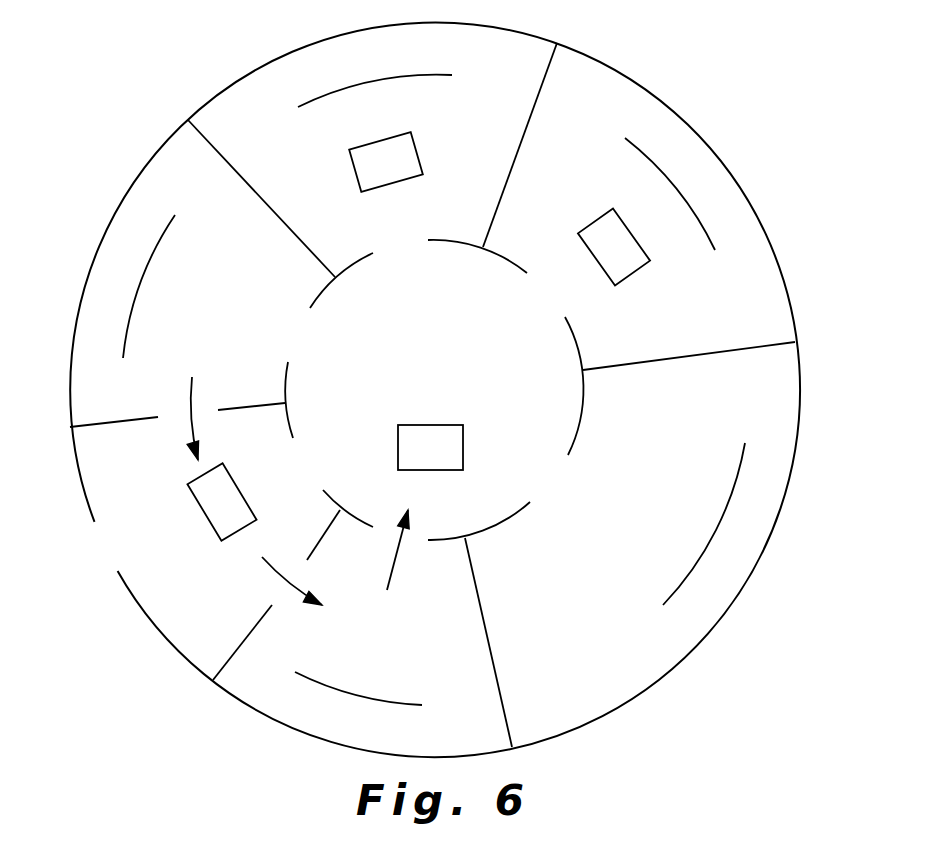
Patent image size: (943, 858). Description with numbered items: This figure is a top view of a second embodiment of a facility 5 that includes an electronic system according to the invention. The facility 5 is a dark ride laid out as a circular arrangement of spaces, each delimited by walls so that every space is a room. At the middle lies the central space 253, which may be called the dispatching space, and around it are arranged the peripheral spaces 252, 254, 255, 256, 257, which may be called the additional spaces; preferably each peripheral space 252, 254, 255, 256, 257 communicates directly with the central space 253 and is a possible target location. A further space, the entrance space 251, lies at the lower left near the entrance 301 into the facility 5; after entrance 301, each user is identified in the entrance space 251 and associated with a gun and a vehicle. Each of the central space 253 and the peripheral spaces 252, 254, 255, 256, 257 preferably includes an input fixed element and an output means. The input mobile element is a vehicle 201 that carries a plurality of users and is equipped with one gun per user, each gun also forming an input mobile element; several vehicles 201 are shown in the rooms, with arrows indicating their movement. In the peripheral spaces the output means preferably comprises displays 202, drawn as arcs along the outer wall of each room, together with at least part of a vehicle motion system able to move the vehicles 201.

The facility 5 is at (683, 98).
The vehicle 201 is at (402, 157).
The displays 202 is at (317, 93).
The entrance space 251 is at (211, 595).
The peripheral space 252 is at (459, 675).
The central space 253 is at (453, 337).
The peripheral space 254 is at (591, 650).
The peripheral space 255 is at (645, 337).
The peripheral space 256 is at (459, 222).
The peripheral space 257 is at (254, 285).
The entrance 301 is at (105, 548).